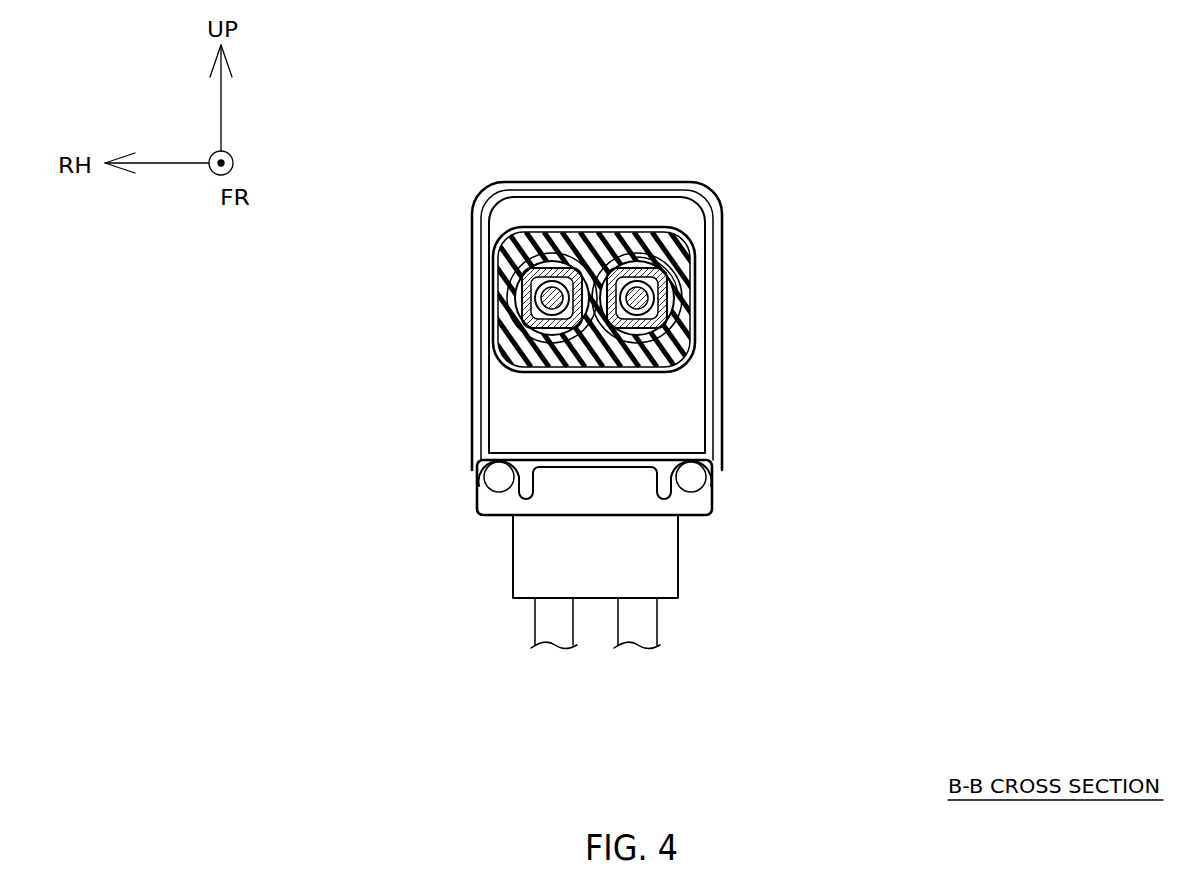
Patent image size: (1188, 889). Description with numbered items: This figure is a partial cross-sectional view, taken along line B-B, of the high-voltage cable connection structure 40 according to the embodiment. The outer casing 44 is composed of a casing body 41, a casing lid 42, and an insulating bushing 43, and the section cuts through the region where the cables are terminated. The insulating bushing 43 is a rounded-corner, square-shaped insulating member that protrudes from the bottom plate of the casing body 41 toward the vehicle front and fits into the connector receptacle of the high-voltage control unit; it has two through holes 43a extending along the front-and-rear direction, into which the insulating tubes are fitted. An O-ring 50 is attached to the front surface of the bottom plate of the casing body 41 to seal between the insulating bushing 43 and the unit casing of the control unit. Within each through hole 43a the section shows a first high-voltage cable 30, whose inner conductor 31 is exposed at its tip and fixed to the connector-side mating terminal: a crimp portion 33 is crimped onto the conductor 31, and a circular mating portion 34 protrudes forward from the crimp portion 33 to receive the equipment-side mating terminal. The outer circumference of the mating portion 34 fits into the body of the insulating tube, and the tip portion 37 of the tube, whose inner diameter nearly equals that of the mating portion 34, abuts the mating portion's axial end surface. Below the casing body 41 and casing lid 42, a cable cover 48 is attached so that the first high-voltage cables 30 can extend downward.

The connector 40 is at (948, 145).
The casing 44 is at (582, 166).
The casing body 41 is at (623, 195).
The casing lid 42 is at (652, 229).
The O-ring 50 is at (672, 243).
The mating portion 34 is at (690, 258).
The insulating bushing 43 is at (675, 268).
The through hole 43a is at (662, 288).
The tip portion 37 is at (672, 293).
The crimp portion 33 is at (680, 322).
The conductor 31 is at (693, 352).
The cable cover 48 is at (712, 490).
The first high-voltage cable 30 is at (531, 623).